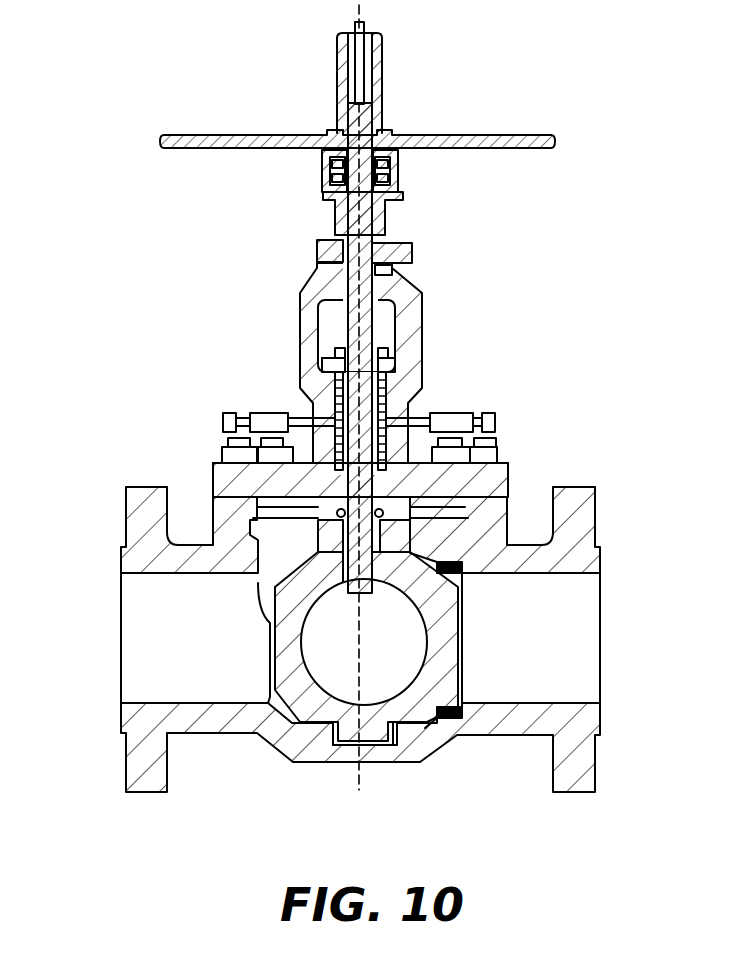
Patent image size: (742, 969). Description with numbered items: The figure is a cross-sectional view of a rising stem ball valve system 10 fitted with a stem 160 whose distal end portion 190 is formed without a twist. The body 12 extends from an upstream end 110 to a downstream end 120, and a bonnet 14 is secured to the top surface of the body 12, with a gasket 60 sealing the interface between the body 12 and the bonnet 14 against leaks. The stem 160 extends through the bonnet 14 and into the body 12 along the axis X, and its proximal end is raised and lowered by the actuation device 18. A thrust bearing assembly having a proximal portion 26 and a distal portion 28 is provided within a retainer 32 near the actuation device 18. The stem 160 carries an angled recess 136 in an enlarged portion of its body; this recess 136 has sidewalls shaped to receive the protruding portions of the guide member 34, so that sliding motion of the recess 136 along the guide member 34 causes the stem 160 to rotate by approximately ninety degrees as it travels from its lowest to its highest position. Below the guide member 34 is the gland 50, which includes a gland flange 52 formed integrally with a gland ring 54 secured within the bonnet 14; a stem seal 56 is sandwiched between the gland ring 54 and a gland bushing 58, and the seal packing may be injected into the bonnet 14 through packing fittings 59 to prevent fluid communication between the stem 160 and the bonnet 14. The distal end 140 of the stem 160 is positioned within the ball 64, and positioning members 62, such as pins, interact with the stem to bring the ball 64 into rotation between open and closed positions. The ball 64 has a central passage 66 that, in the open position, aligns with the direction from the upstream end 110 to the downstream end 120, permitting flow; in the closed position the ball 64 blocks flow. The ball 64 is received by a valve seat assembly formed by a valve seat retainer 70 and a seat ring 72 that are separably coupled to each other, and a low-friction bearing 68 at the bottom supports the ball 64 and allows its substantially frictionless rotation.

The ball valve system 10 is at (176, 109).
The axis X is at (356, 72).
The actuation device 18 is at (390, 133).
The proximal portion of thrust bearing assembly 26 is at (330, 163).
The retainer 32 is at (326, 178).
The distal portion of thrust bearing assembly 28 is at (337, 197).
The guide member 34 is at (413, 250).
The angled recess 136 is at (390, 270).
The stem 160 is at (386, 330).
The gland 50 is at (188, 286).
The gland flange 52 is at (332, 355).
The gland ring 54 is at (328, 375).
The stem seal 56 is at (335, 415).
The packing fitting 59 is at (252, 415).
The gland bushing 58 is at (333, 458).
The gasket 60 is at (253, 500).
The bonnet 14 is at (500, 477).
The body 12 is at (587, 495).
The positioning member 62 is at (382, 510).
The upstream end 110 is at (121, 570).
The downstream end 120 is at (600, 722).
The distal end portion 190 is at (376, 540).
The distal end 140 is at (355, 595).
The passage 66 is at (398, 667).
The ball 64 is at (298, 700).
The bearing 68 is at (338, 735).
The seat ring 72 is at (437, 716).
The valve seat retainer 70 is at (457, 720).